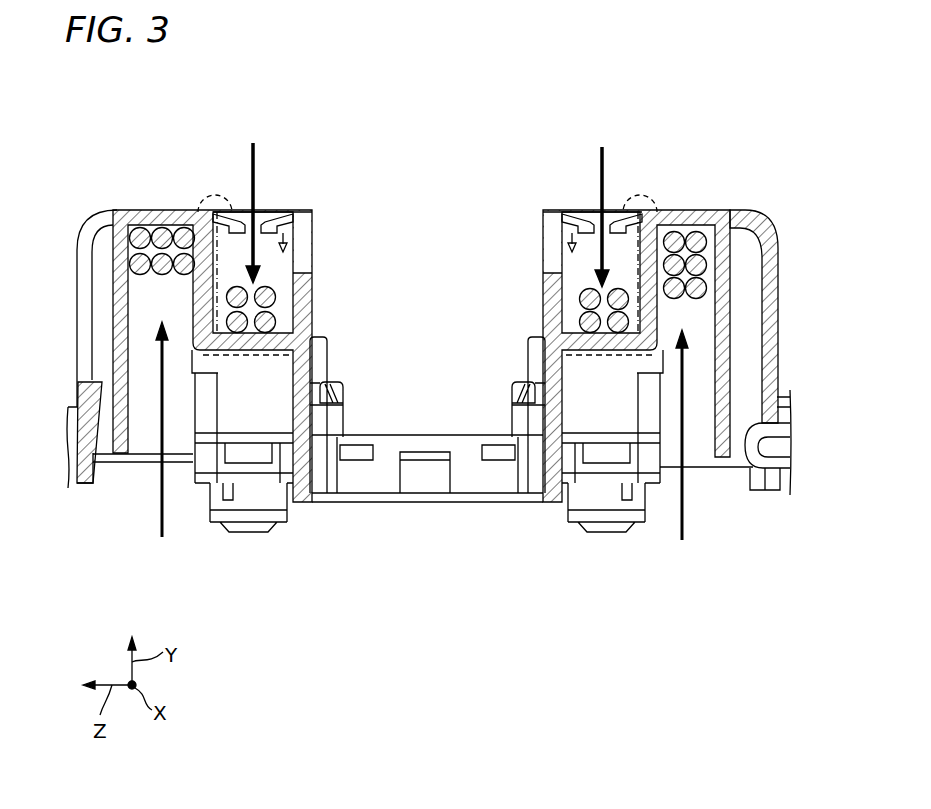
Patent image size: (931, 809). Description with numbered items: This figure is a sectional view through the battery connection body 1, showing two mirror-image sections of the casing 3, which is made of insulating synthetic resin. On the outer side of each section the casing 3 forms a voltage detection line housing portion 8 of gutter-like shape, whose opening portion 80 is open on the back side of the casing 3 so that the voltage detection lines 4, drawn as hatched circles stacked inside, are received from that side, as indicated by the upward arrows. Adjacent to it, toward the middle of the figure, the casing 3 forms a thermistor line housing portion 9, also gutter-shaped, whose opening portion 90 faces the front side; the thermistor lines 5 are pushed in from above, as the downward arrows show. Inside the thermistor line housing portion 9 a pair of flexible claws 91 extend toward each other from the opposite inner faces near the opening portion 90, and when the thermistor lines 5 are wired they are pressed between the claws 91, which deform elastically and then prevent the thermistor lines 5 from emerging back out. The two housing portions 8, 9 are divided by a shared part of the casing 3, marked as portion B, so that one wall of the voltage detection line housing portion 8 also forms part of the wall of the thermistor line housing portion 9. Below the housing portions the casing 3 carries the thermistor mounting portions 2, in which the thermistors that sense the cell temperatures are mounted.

The battery connection body 1 is at (746, 80).
The thermistor mounting portion 2 is at (273, 398).
The casing 3 is at (727, 217).
The voltage detection line 4 is at (162, 210).
The thermistor line 5 is at (277, 321).
The voltage detection line housing portion 8 is at (158, 299).
The thermistor line housing portion 9 is at (286, 216).
The opening portion 80 is at (187, 443).
The opening portion 90 is at (261, 215).
The flexible claw 91 is at (232, 213).
The portion B is at (243, 355).